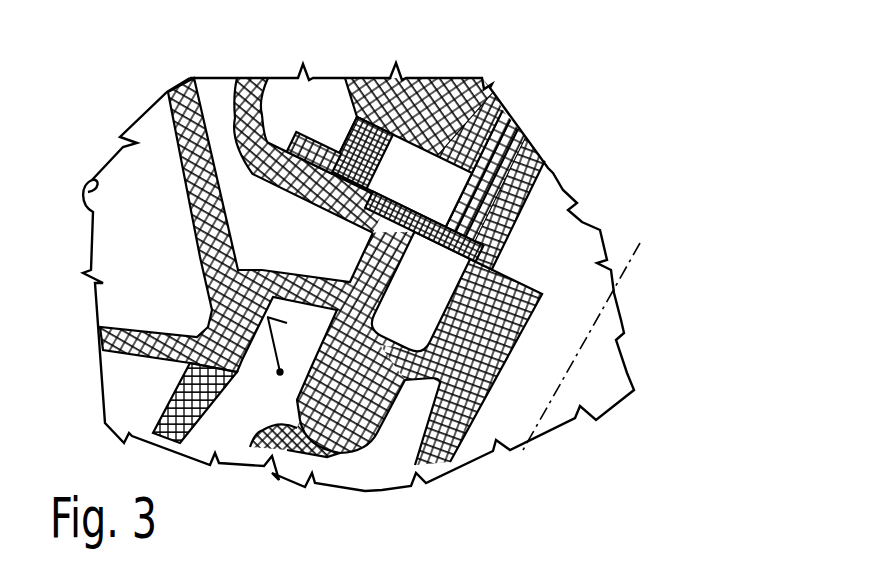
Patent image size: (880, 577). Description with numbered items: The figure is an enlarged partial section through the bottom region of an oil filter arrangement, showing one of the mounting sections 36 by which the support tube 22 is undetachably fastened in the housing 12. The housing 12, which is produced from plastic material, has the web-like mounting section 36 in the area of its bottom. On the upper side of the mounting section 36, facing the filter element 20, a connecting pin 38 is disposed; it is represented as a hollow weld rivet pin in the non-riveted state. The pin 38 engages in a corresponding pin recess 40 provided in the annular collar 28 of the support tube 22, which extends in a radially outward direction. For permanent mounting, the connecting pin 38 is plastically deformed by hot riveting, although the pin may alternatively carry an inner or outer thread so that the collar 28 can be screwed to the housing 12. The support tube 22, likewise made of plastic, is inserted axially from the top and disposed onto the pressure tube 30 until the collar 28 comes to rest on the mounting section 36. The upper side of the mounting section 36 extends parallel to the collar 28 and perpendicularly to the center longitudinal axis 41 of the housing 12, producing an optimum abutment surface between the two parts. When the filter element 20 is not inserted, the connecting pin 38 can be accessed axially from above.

The housing 12 is at (357, 427).
The filter element 20 is at (439, 78).
The support tube 22 is at (478, 152).
The annular collar 28 is at (300, 130).
The pressure tube 30 is at (549, 172).
The mounting section 36 is at (293, 187).
The connecting pin 38 is at (356, 125).
The pin recess 40 is at (424, 132).
The center longitudinal axis 41 is at (627, 263).